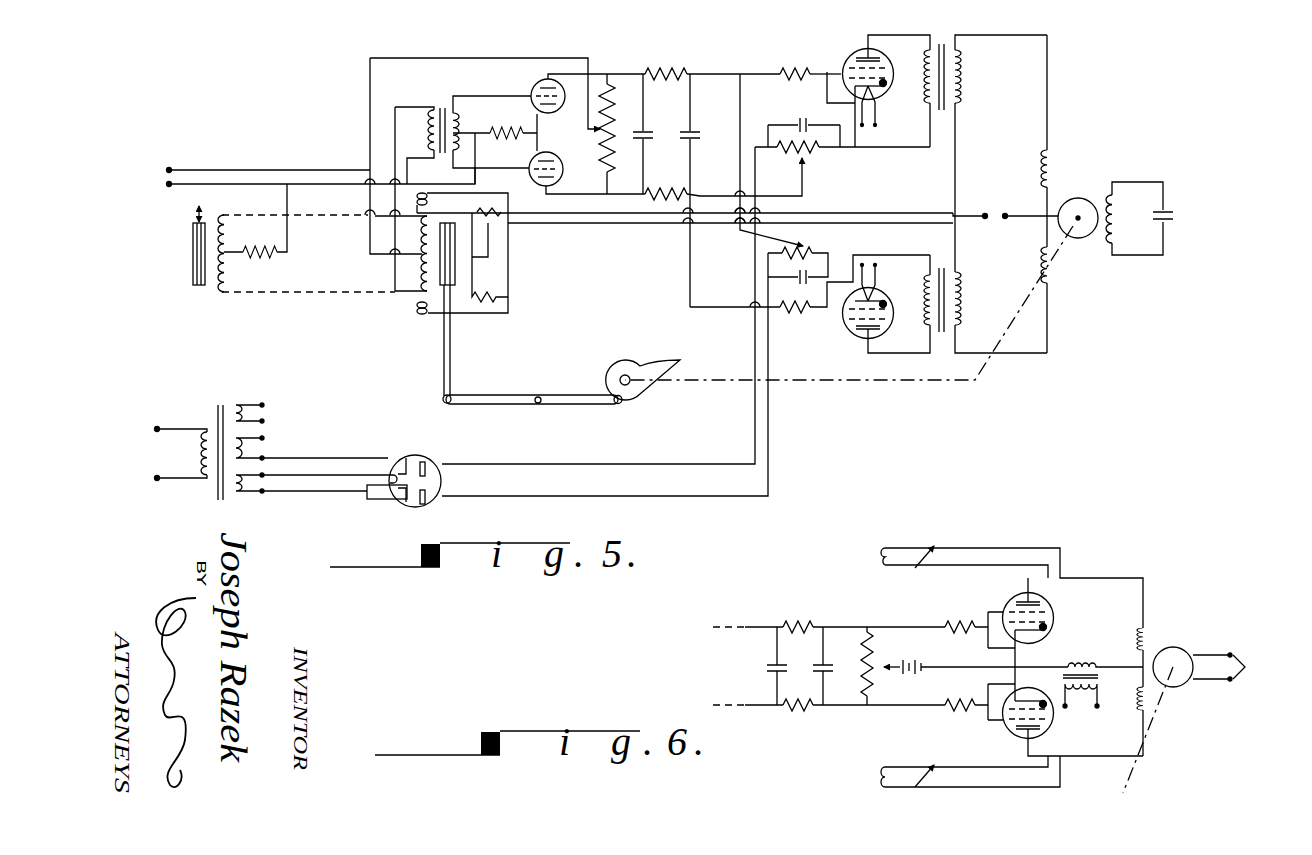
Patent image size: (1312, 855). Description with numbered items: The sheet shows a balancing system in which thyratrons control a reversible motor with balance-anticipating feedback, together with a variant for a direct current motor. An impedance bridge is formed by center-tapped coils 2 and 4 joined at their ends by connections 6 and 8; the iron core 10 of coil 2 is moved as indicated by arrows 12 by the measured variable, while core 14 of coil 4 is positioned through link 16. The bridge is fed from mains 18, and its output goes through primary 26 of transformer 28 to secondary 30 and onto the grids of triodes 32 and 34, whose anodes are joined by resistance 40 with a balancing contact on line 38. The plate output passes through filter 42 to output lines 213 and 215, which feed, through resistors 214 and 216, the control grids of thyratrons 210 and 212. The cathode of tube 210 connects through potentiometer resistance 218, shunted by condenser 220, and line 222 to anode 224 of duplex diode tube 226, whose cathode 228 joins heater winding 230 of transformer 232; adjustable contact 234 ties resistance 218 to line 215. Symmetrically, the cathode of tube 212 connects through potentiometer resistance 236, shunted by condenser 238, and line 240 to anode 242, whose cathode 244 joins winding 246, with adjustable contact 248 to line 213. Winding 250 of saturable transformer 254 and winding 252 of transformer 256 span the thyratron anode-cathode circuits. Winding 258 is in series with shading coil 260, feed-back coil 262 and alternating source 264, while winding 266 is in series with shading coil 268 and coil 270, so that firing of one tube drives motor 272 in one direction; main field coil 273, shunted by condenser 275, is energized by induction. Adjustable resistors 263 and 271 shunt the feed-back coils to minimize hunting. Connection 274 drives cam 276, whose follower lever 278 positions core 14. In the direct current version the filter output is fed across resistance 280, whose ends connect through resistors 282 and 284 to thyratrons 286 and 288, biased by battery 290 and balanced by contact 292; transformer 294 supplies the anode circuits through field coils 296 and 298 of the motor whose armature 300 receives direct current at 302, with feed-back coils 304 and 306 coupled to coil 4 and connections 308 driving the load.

In FIG. 5, the center-tapped coil 2 is at (232, 272).
In FIG. 5, the center-tapped coil 4 is at (413, 262).
In FIG. 5, the connection 6 is at (342, 215).
In FIG. 5, the connection 8 is at (343, 292).
In FIG. 5, the iron core 10 is at (193, 250).
In FIG. 5, the arrows 12 is at (197, 213).
In FIG. 5, the core 14 is at (457, 268).
In FIG. 5, the connection 16 is at (451, 362).
In FIG. 5, the mains 18 is at (222, 184).
In FIG. 5, the primary 26 is at (428, 125).
In FIG. 5, the transformer 28 is at (443, 103).
In FIG. 5, the transformer secondary 30 is at (460, 126).
In FIG. 5, the triode 32 is at (552, 113).
In FIG. 5, the triode 34 is at (561, 167).
In FIG. 5, the line 38 is at (490, 58).
In FIG. 5, the resistance 40 is at (612, 155).
In FIG. 5, the filter system 42 is at (668, 96).
In FIG. 6, the filter system 42 is at (798, 645).
In FIG. 5, the thyratron 210 is at (850, 56).
In FIG. 5, the thyratron 212 is at (848, 334).
In FIG. 5, the output line 213 is at (740, 74).
In FIG. 5, the resistor 214 is at (796, 73).
In FIG. 5, the output line 215 is at (704, 196).
In FIG. 5, the resistor 216 is at (796, 312).
In FIG. 5, the potentiometer resistance 218 is at (809, 148).
In FIG. 5, the condenser 220 is at (798, 123).
In FIG. 5, the line 222 is at (662, 496).
In FIG. 5, the anode 224 is at (427, 500).
In FIG. 5, the duplex diode tube 226 is at (405, 458).
In FIG. 5, the cathode 228 is at (410, 505).
In FIG. 5, the heater winding 230 is at (248, 495).
In FIG. 5, the transformer 232 is at (226, 407).
In FIG. 5, the adjustable contact 234 is at (798, 152).
In FIG. 5, the potentiometer resistance 236 is at (822, 253).
In FIG. 5, the condenser 238 is at (800, 281).
In FIG. 5, the line 240 is at (664, 464).
In FIG. 5, the anode 242 is at (432, 462).
In FIG. 5, the cathode 244 is at (420, 460).
In FIG. 5, the winding 246 is at (262, 438).
In FIG. 5, the adjustable contact 248 is at (808, 245).
In FIG. 5, the winding 250 is at (927, 90).
In FIG. 5, the winding 252 is at (925, 300).
In FIG. 5, the transformer 254 is at (946, 47).
In FIG. 5, the transformer 256 is at (941, 342).
In FIG. 5, the winding 258 is at (960, 75).
In FIG. 5, the shading coil 260 is at (1054, 175).
In FIG. 5, the coil 262 is at (429, 202).
In FIG. 5, the adjustable resistor 263 is at (478, 219).
In FIG. 5, the source of alternating current 264 is at (993, 222).
In FIG. 5, the winding 266 is at (958, 300).
In FIG. 5, the shading coil 268 is at (1054, 275).
In FIG. 5, the coil 270 is at (417, 308).
In FIG. 5, the adjustable resistor 271 is at (497, 291).
In FIG. 5, the motor 272 is at (1082, 239).
In FIG. 5, the main field coil 273 is at (1118, 210).
In FIG. 5, the connection 274 is at (862, 385).
In FIG. 5, the condenser 275 is at (1173, 225).
In FIG. 5, the cam 276 is at (652, 370).
In FIG. 5, the follower lever 278 is at (562, 405).
In FIG. 6, the resistance 280 is at (878, 637).
In FIG. 6, the resistor 282 is at (957, 635).
In FIG. 6, the resistor 284 is at (955, 715).
In FIG. 6, the thyratron 286 is at (1054, 611).
In FIG. 6, the thyratron 288 is at (1050, 720).
In FIG. 6, the battery 290 is at (921, 669).
In FIG. 6, the contact 292 is at (880, 670).
In FIG. 6, the transformer 294 is at (1103, 684).
In FIG. 6, the field coil 296 is at (1149, 636).
In FIG. 6, the field coil 298 is at (1150, 700).
In FIG. 6, the armature 300 is at (1188, 652).
In FIG. 6, the direct current supply 302 is at (1238, 667).
In FIG. 6, the feed-back coil 304 is at (884, 554).
In FIG. 6, the feed-back coil 306 is at (884, 778).
In FIG. 6, the connections 308 is at (1132, 780).